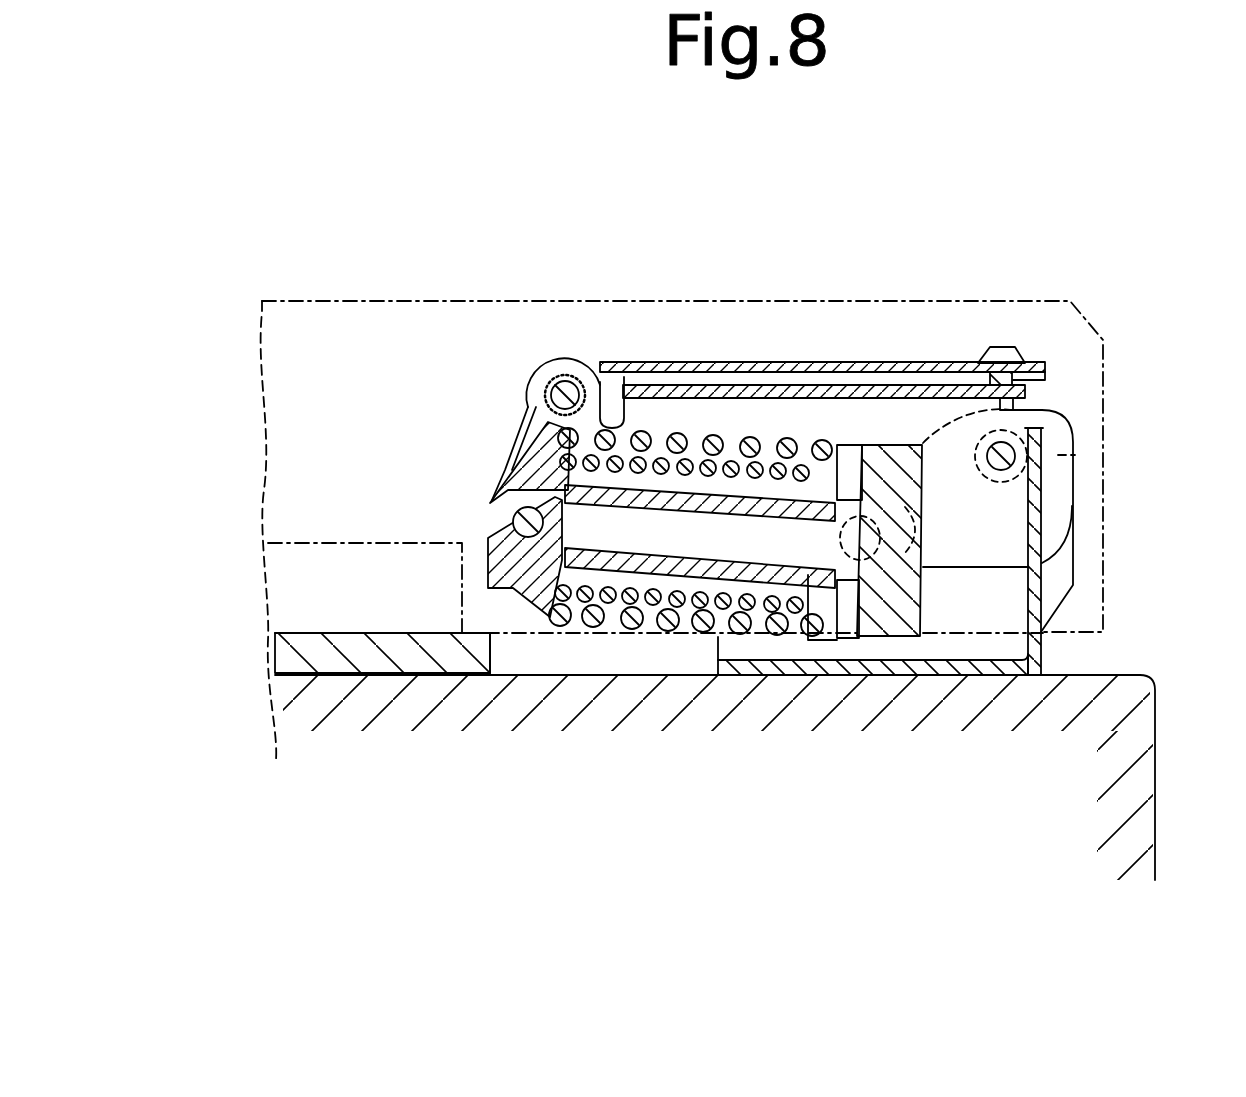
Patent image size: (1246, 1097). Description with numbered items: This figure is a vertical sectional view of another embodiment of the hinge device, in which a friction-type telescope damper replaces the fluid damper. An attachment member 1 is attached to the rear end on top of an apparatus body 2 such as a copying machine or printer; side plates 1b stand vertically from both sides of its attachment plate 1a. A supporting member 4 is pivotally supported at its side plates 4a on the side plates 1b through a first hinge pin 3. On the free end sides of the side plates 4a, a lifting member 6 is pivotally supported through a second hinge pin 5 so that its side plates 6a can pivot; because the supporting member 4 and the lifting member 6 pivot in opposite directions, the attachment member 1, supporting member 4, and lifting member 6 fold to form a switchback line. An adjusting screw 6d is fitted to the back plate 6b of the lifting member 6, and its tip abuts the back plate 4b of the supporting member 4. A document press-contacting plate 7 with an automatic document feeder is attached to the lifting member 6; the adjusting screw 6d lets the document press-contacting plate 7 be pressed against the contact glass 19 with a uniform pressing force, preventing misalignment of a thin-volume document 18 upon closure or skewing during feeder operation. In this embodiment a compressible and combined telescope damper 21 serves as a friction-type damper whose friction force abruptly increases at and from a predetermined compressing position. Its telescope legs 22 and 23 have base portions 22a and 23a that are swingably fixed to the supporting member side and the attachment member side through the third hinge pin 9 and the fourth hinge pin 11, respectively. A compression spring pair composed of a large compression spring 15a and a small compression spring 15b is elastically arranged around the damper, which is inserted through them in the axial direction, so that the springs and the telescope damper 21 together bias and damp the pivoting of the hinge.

The attachment member 1 is at (1076, 568).
The attachment plate 1a is at (1053, 590).
The side plate 1b is at (977, 675).
The apparatus body 2 is at (1158, 730).
The first hinge pin 3 is at (1010, 447).
The supporting member 4 is at (1080, 478).
The side plate 4a is at (1012, 532).
The back plate 4b is at (918, 385).
The second hinge pin 5 is at (566, 360).
The lifting member 6 is at (946, 355).
The side plate 6a is at (850, 385).
The back plate 6b is at (790, 362).
The adjusting screw 6d is at (1007, 350).
The document press-contacting plate 7 is at (423, 300).
The third hinge pin 9 is at (515, 520).
The fourth hinge pin 11 is at (862, 553).
The large compression spring 15a is at (716, 436).
The small compression spring 15b is at (685, 459).
The thin-volume document 18 is at (340, 628).
The contact glass 19 is at (328, 676).
The telescope damper 21 is at (677, 575).
The telescope leg 22 is at (530, 573).
The base portion 22a is at (517, 480).
The telescope leg 23 is at (873, 613).
The base portion 23a is at (870, 507).